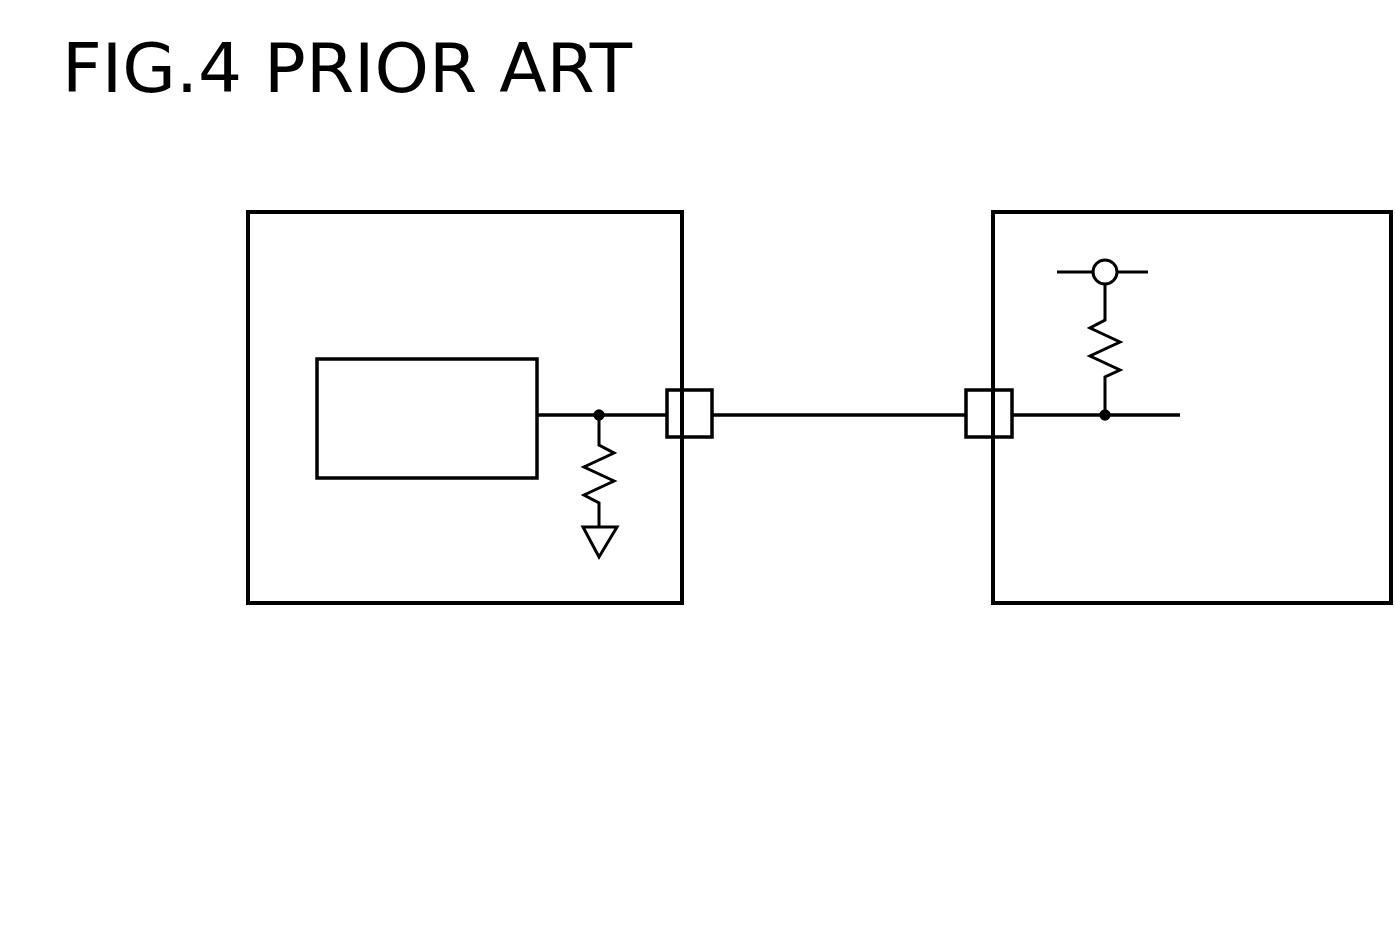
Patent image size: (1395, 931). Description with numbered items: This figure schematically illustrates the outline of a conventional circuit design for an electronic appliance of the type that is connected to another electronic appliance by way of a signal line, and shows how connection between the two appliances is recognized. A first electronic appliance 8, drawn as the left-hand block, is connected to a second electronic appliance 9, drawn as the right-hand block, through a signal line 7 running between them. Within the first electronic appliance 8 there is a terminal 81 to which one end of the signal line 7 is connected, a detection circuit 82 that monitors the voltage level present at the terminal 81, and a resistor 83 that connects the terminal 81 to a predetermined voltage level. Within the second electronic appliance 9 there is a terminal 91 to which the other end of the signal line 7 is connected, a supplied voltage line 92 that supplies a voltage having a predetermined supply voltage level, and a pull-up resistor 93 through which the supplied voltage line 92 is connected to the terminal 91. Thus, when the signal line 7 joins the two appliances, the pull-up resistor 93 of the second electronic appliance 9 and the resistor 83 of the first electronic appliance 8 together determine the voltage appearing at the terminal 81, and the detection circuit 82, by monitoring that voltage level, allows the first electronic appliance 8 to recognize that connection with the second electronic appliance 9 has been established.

The signal line 7 is at (832, 417).
The first electronic appliance 8 is at (373, 607).
The terminal 81 is at (705, 387).
The detection circuit 82 is at (503, 357).
The resistor 83 is at (583, 487).
The second electronic appliance 9 is at (1075, 605).
The terminal 91 is at (975, 390).
The supplied voltage line 92 is at (1066, 272).
The pull-up resistor 93 is at (1127, 343).